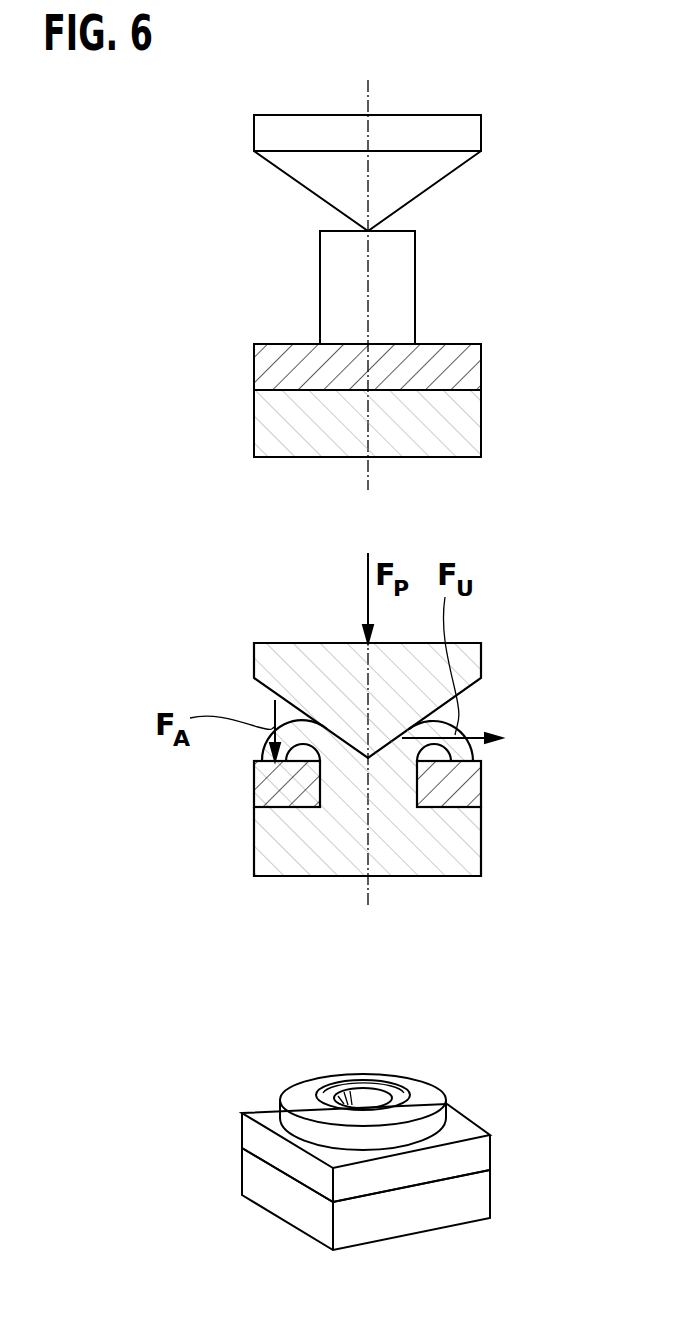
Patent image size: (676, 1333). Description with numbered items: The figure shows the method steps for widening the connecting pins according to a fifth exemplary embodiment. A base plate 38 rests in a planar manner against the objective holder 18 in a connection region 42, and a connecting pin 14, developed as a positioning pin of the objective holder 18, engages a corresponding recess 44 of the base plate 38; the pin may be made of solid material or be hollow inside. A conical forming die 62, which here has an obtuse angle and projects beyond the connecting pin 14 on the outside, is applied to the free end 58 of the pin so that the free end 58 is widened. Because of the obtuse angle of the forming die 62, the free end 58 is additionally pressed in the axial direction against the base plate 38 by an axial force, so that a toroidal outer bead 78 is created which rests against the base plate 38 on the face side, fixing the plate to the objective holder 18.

The connecting pin 14 is at (330, 278).
The objective holder 18 is at (270, 428).
The base plate 38 is at (460, 365).
The connection region 42 is at (472, 389).
The recess 44 is at (413, 783).
The free end 58 is at (403, 232).
The conical forming die 62 is at (330, 182).
The toroidal outer bead 78 is at (403, 1093).